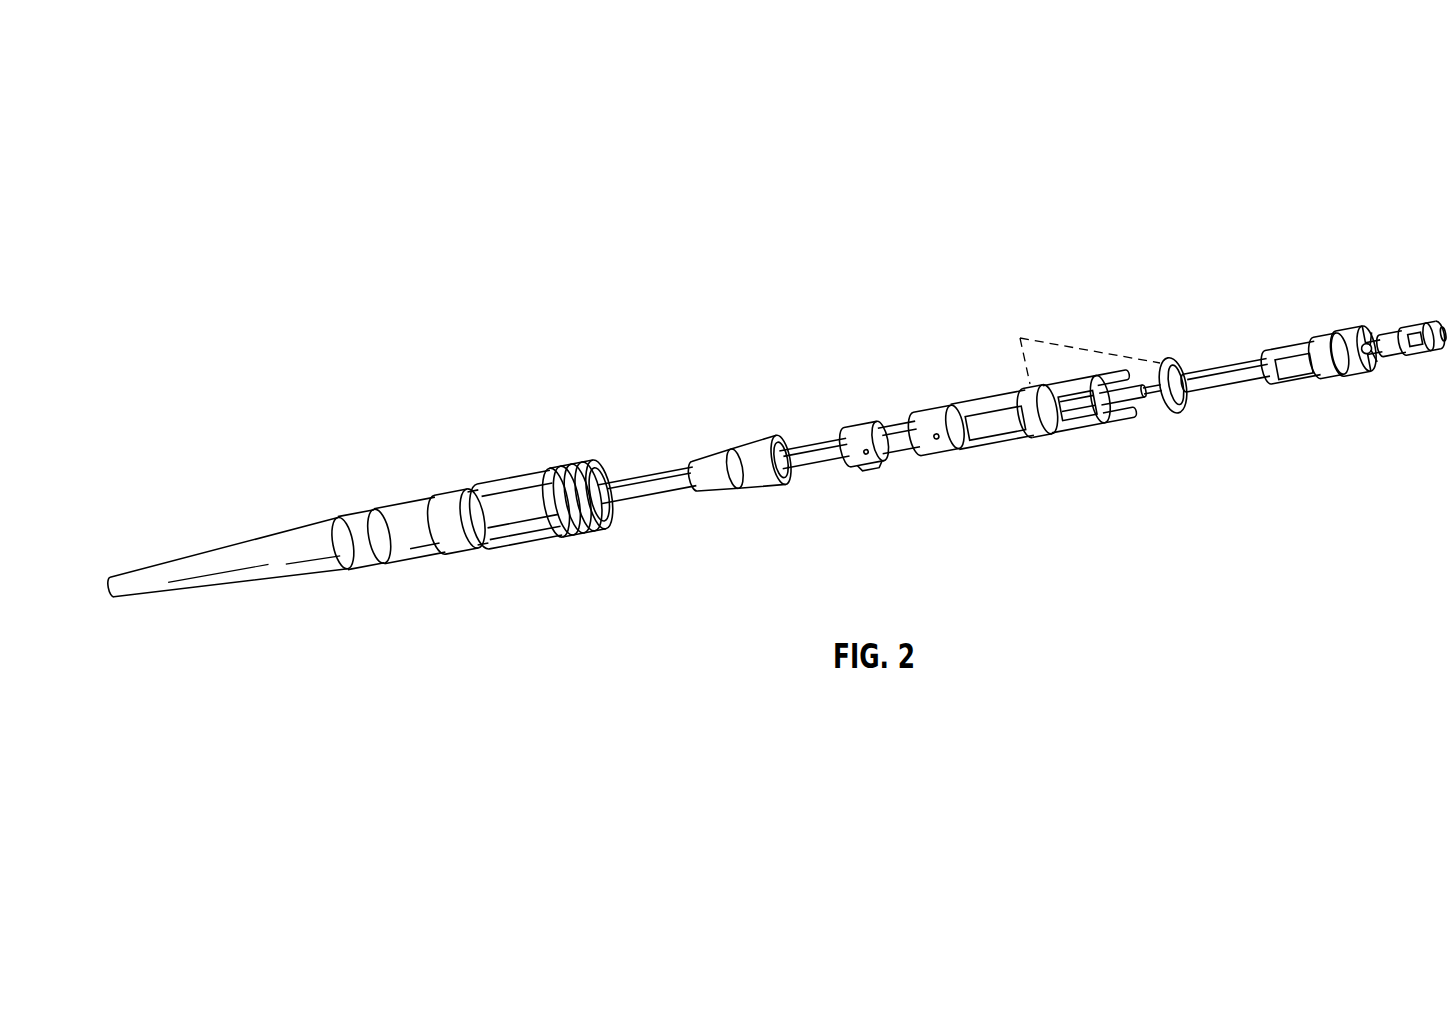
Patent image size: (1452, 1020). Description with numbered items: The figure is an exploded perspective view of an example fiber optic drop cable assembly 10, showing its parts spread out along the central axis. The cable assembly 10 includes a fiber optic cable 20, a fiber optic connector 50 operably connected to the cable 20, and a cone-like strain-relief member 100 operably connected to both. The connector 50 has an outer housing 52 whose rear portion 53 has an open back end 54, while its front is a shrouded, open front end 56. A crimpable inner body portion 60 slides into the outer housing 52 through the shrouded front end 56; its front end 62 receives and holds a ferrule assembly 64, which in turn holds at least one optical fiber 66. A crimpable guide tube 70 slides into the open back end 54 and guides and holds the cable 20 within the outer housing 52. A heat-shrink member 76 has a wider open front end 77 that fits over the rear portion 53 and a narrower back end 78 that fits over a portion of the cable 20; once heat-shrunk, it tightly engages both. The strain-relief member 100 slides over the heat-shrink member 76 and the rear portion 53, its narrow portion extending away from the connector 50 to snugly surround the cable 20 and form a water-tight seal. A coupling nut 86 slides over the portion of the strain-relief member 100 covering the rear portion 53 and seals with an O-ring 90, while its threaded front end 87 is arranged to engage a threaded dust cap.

The cable assembly 10 is at (443, 290).
The fiber optic connector 50 is at (1267, 200).
The strain-relief member 100 is at (300, 533).
The coupling nut 86 is at (545, 467).
The threaded front end 87 is at (580, 462).
The back end 78 is at (645, 500).
The heat-shrink member 76 is at (686, 450).
The open front end 77 is at (732, 477).
The fiber optic cable 20 is at (805, 460).
The crimpable guide tube 70 is at (885, 418).
The open back end 54 is at (920, 455).
The outer housing 52 is at (1000, 393).
The rear portion 53 is at (945, 385).
The shrouded open front end 56 is at (1092, 440).
The optical fiber 66 is at (1140, 395).
The O-ring 90 is at (1170, 365).
The crimpable inner body portion 60 is at (1257, 370).
The front end 62 is at (1370, 365).
The ferrule assembly 64 is at (1403, 325).